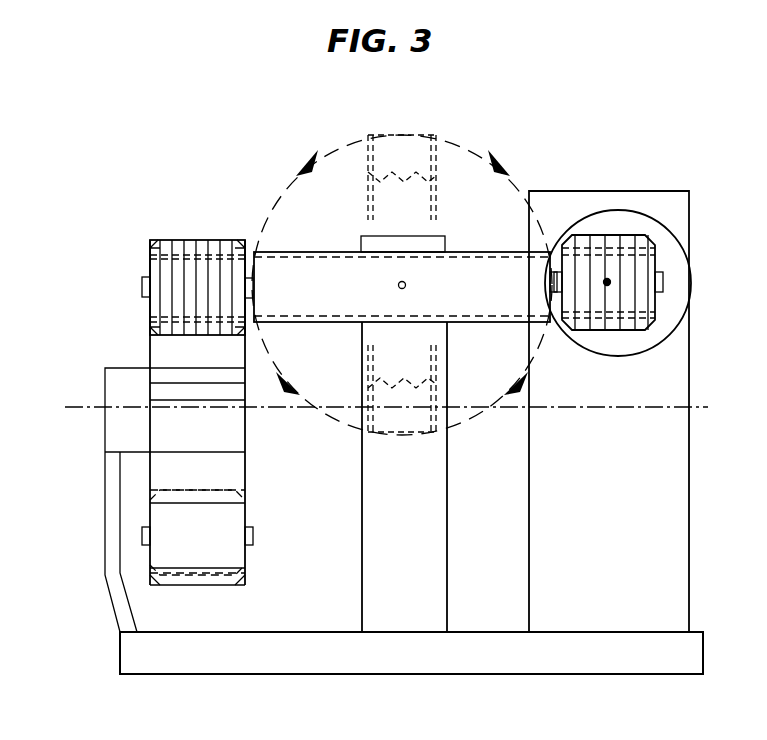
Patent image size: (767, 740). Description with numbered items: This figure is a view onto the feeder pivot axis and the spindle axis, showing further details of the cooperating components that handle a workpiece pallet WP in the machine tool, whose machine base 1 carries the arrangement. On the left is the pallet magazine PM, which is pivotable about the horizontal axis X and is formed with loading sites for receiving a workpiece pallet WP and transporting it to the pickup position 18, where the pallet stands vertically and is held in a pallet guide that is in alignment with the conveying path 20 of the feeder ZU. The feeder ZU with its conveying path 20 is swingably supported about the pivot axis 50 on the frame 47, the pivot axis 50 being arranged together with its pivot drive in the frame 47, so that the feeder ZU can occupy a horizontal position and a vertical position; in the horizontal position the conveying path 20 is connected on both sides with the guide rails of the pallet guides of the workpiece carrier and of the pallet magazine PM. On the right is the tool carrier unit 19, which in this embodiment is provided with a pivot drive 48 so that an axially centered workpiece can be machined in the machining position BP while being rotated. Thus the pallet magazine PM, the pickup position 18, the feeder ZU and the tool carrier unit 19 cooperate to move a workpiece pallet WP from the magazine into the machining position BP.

The machine base 1 is at (322, 624).
The pickup position 18 is at (203, 222).
The tool carrier unit 19 is at (658, 192).
The conveying path 20 is at (334, 248).
The frame 47 is at (434, 514).
The pivot drive 48 is at (682, 226).
The pivot axis 50 is at (406, 282).
The workpiece pallet WP is at (180, 245).
The pallet magazine PM is at (152, 352).
The horizontal axis X is at (86, 395).
The feeder ZU is at (415, 150).
The machining position BP is at (586, 370).